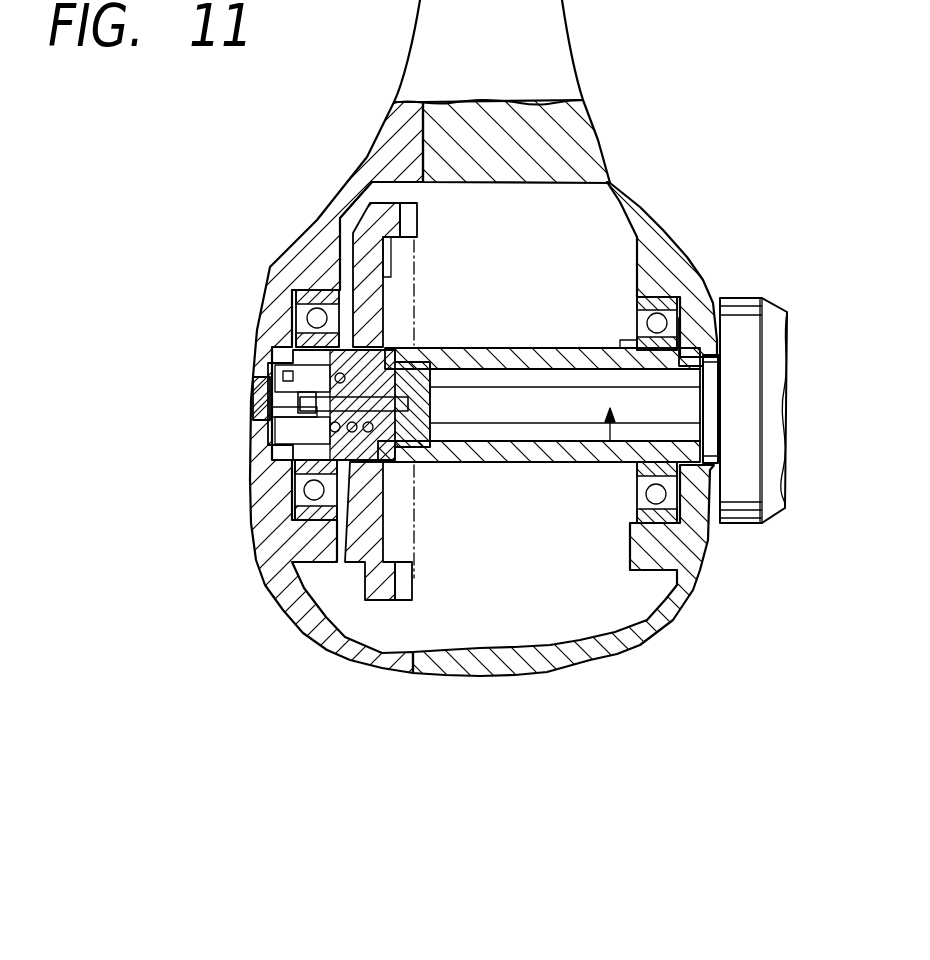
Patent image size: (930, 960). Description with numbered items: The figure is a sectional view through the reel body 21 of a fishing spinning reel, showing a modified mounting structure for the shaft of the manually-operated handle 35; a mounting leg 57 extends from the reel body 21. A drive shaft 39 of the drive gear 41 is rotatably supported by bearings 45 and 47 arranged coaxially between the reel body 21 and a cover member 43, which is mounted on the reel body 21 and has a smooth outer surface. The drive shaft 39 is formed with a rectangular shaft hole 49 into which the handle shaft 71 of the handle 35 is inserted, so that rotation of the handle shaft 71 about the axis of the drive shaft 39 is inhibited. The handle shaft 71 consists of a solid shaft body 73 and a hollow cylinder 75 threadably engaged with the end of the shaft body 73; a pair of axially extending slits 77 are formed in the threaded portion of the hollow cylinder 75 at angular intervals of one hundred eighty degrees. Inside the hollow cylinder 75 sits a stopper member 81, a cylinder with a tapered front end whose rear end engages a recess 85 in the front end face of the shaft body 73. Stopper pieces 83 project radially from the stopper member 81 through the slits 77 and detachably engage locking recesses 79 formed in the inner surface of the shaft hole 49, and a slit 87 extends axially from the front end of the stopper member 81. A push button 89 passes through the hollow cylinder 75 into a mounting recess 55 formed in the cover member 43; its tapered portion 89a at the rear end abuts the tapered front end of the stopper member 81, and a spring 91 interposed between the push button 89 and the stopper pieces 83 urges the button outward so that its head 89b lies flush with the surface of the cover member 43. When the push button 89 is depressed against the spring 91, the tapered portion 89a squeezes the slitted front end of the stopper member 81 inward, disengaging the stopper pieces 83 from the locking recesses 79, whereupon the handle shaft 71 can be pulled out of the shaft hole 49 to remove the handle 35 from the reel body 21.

The reel body 21 is at (518, 665).
The manually-operated handle 35 is at (777, 357).
The drive shaft 39 is at (553, 450).
The drive gear 41 is at (387, 213).
The cover member 43 is at (332, 645).
The bearing 45 is at (293, 300).
The bearing 47 is at (655, 310).
The rectangular shaft hole 49 is at (552, 365).
The mounting recess 55 is at (268, 445).
The mounting leg 57 is at (557, 24).
The handle shaft 71 is at (610, 422).
The solid shaft body 73 is at (680, 397).
The hollow cylinder 75 is at (256, 330).
The slits 77 is at (427, 350).
The locking recesses 79 is at (375, 455).
The stopper member 81 is at (320, 260).
The stopper pieces 83 is at (352, 290).
The recess 85 is at (455, 410).
The slit 87 is at (258, 445).
The push button 89 is at (252, 378).
The tapered portion 89a is at (290, 487).
The head 89b is at (255, 418).
The spring 91 is at (372, 475).